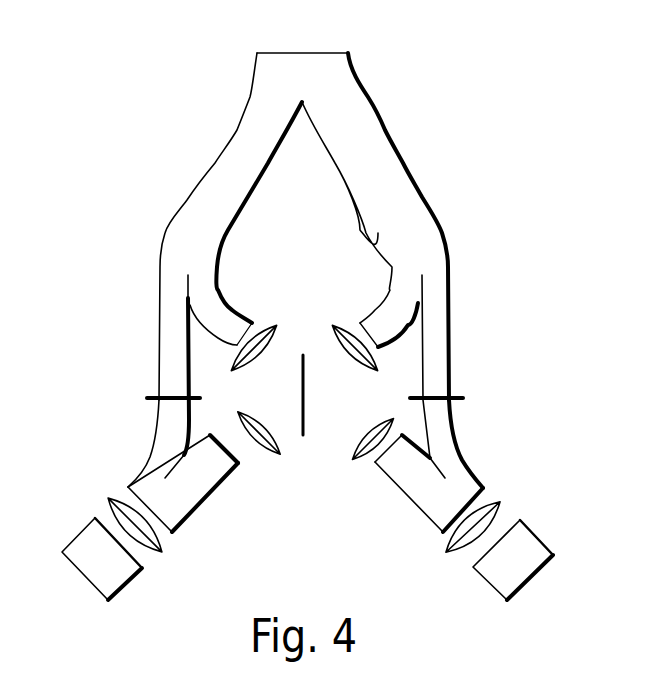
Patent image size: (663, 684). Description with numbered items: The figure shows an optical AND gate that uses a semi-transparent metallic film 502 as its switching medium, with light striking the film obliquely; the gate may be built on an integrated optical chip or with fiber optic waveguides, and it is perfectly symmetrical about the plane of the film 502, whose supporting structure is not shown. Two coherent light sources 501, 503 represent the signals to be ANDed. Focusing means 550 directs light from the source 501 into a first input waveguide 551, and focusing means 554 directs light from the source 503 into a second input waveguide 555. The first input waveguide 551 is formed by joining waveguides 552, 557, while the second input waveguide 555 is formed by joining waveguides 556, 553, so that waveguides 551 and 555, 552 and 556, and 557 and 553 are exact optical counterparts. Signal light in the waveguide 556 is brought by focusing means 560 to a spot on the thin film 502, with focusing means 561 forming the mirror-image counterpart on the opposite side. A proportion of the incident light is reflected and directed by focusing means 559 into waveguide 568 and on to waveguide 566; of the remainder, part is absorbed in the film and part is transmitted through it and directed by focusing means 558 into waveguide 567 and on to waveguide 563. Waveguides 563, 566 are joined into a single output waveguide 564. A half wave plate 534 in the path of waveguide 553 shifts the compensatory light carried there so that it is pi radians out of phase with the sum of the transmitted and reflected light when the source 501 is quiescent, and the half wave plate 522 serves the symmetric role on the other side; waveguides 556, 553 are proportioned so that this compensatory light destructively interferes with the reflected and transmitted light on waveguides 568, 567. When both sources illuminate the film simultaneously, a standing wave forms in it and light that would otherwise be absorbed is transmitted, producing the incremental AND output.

The coherent light source 501 is at (120, 595).
The semi-transparent metallic film 502 is at (295, 360).
The coherent light source 503 is at (550, 552).
The half wave plate 522 is at (157, 397).
The half wave plate 534 is at (453, 392).
The focusing means 550 is at (157, 550).
The first input waveguide 551 is at (187, 522).
The waveguide 552 is at (203, 500).
The waveguide 553 is at (465, 455).
The focusing means 554 is at (500, 507).
The second input waveguide 555 is at (440, 527).
The waveguide 556 is at (393, 488).
The waveguide 557 is at (148, 425).
The focusing means 558 is at (268, 323).
The focusing means 559 is at (350, 325).
The focusing means 560 is at (370, 427).
The focusing means 561 is at (281, 402).
The waveguide 563 is at (245, 147).
The output waveguide 564 is at (355, 78).
The waveguide 566 is at (398, 167).
The waveguide 567 is at (227, 297).
The waveguide 568 is at (383, 315).